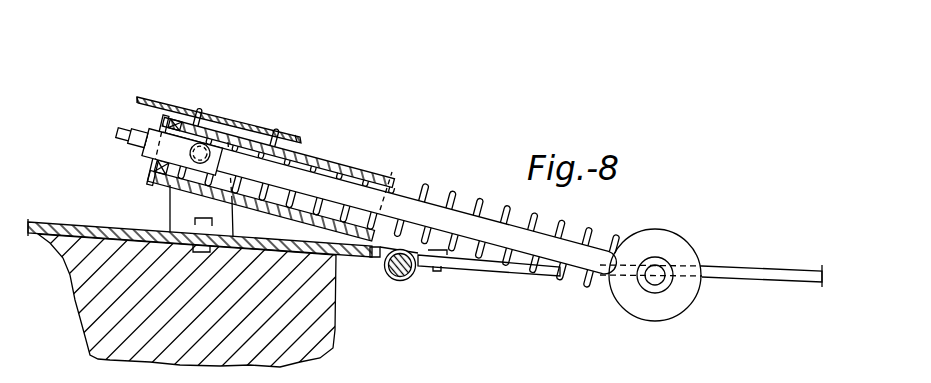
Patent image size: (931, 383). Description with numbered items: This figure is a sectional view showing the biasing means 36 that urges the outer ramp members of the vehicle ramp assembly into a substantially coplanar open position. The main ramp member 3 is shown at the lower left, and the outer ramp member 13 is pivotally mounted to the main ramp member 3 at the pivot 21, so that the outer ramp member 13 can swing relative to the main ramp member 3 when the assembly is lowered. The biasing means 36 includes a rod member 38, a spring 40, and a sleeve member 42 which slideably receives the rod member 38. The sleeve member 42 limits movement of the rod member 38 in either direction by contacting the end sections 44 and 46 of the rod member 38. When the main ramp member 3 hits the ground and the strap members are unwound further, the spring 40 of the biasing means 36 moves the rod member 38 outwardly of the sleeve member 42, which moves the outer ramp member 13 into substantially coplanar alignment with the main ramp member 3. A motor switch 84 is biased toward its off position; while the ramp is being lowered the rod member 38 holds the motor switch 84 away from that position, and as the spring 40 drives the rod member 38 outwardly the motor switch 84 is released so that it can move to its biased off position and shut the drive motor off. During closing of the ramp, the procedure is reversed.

The main ramp member 3 is at (278, 333).
The outer ramp member 13 is at (768, 277).
The pivot 21 is at (402, 281).
The biasing means 36 is at (344, 164).
The rod member 38 is at (505, 238).
The spring 40 is at (427, 190).
The sleeve member 42 is at (316, 143).
The end section 44 is at (668, 257).
The end section 46 is at (152, 175).
The motor switch 84 is at (118, 139).